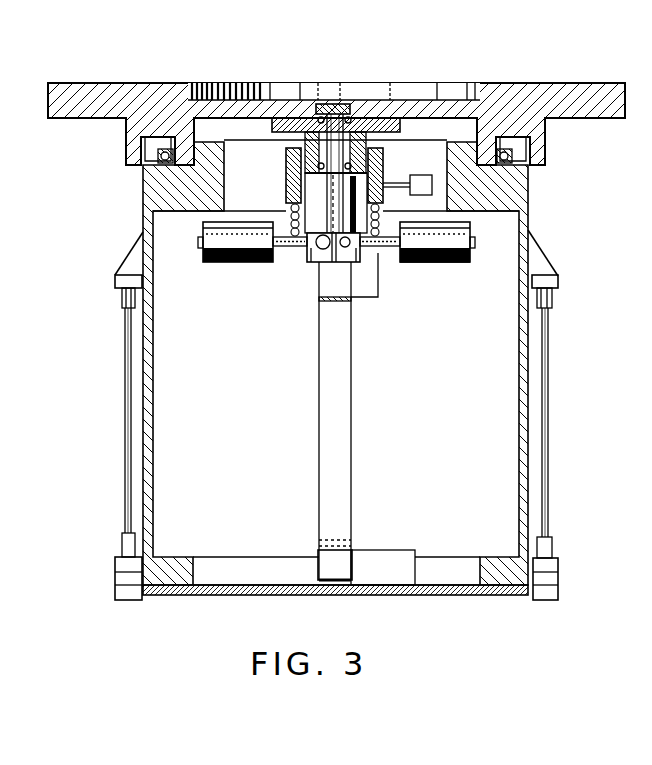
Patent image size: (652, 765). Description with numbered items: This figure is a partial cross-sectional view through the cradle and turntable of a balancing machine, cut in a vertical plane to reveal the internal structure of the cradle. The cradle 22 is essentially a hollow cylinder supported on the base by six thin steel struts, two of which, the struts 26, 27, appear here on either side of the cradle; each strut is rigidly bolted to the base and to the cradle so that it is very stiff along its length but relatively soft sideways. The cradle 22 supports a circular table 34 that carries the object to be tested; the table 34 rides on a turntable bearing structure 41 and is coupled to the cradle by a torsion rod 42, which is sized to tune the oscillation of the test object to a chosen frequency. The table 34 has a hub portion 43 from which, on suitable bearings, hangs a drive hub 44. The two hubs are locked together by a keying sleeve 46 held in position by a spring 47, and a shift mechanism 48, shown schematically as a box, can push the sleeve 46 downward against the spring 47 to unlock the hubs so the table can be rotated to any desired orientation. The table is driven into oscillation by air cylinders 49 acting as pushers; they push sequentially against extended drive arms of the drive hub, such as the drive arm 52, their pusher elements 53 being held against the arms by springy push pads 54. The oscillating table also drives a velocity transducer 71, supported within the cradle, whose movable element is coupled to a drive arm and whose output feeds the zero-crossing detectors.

The cradle 22 is at (154, 347).
The strut 26 is at (125, 387).
The strut 27 is at (550, 388).
The table 34 is at (150, 97).
The turntable bearing structure 41 is at (492, 146).
The torsion rod 42 is at (354, 413).
The hub portion 43 is at (271, 126).
The drive hub 44 is at (303, 191).
The keying sleeve 46 is at (286, 165).
The spring 47 is at (293, 212).
The shift mechanism 48 is at (416, 175).
The air cylinder 49 is at (217, 263).
The drive arm 52 is at (335, 263).
The pusher element 53 is at (297, 249).
The springy push pad 54 is at (311, 263).
The velocity transducer 71 is at (452, 264).